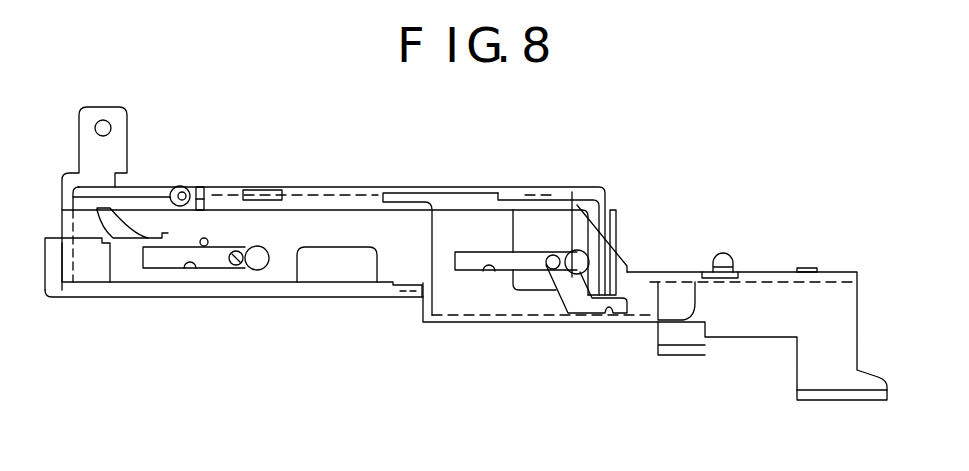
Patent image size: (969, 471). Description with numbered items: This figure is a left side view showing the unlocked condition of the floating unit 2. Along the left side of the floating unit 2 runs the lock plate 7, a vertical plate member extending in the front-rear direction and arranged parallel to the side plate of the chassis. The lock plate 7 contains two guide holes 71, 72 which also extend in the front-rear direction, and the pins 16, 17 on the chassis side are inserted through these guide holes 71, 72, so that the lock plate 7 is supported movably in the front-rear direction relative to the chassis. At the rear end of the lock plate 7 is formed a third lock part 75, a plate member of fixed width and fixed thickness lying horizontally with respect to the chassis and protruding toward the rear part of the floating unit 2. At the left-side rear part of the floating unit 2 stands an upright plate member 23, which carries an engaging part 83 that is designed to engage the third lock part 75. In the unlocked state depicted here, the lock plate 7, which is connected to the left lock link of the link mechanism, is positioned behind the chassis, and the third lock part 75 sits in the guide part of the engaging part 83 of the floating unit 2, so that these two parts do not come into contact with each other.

The floating unit 2 is at (370, 193).
The lock plate 7 is at (297, 227).
The pin 16 is at (553, 267).
The pin 17 is at (242, 262).
The upright plate member 23 is at (97, 263).
The guide hole 71 is at (490, 269).
The guide hole 72 is at (195, 266).
The third lock part 75 is at (143, 249).
The engaging part 83 is at (148, 236).